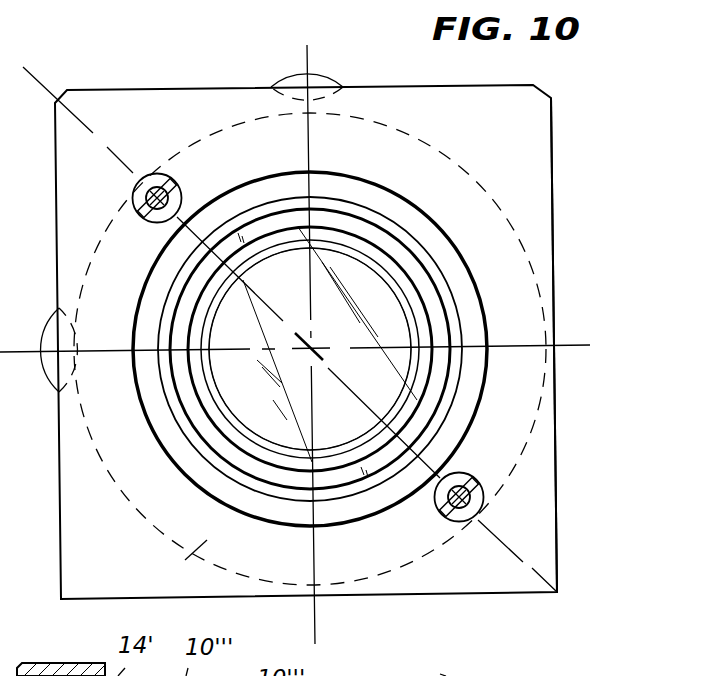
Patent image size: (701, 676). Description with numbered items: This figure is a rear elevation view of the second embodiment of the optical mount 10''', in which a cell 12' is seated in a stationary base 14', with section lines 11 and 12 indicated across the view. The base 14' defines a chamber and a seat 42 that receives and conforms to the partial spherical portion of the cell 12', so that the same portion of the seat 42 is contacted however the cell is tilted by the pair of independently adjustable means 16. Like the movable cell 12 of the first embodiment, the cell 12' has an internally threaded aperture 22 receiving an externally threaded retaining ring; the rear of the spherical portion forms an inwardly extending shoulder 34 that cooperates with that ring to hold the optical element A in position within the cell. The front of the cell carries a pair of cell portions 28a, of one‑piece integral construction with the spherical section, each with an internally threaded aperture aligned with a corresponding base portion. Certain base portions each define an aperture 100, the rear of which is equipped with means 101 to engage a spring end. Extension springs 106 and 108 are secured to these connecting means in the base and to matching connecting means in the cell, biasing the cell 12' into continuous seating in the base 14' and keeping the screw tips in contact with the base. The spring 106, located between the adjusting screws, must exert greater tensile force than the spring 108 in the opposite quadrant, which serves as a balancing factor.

The optical mount 10''' is at (321, 323).
The base 14' is at (582, 345).
The movable cell 12 is at (320, 317).
The section line 11- 11 is at (307, 45).
The cell 12' is at (339, 349).
The independently adjustable means 16 is at (272, 78).
The internally threaded aperture 22 is at (224, 452).
The inwardly extending shoulder 34 is at (222, 425).
The seat 42 is at (182, 556).
The aperture 100 is at (133, 197).
The means to engage a spring end 101 is at (138, 208).
The extension spring 106 is at (157, 174).
The extension spring 108 is at (466, 478).
The optical element A is at (255, 404).
The cell portions 28a is at (420, 666).